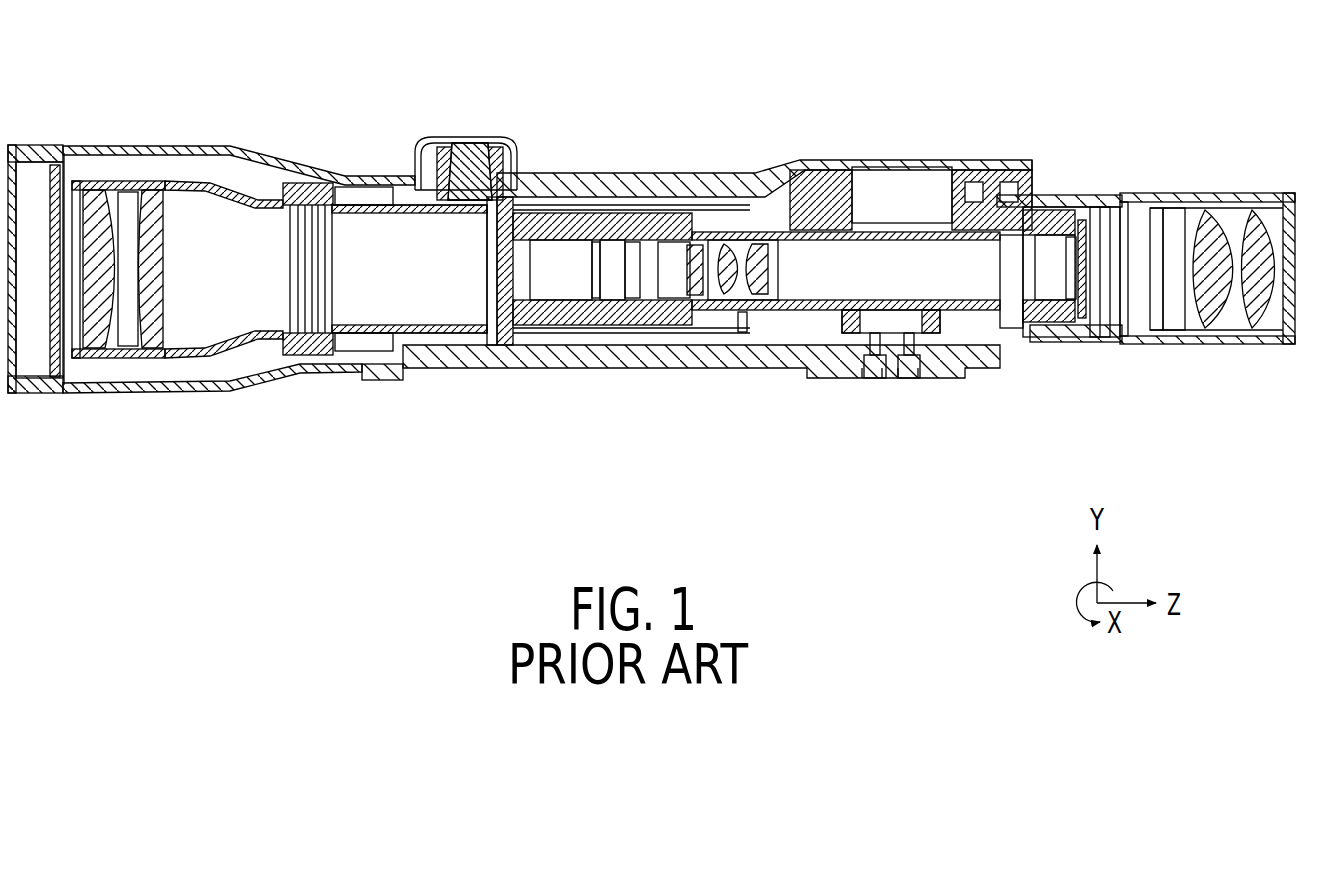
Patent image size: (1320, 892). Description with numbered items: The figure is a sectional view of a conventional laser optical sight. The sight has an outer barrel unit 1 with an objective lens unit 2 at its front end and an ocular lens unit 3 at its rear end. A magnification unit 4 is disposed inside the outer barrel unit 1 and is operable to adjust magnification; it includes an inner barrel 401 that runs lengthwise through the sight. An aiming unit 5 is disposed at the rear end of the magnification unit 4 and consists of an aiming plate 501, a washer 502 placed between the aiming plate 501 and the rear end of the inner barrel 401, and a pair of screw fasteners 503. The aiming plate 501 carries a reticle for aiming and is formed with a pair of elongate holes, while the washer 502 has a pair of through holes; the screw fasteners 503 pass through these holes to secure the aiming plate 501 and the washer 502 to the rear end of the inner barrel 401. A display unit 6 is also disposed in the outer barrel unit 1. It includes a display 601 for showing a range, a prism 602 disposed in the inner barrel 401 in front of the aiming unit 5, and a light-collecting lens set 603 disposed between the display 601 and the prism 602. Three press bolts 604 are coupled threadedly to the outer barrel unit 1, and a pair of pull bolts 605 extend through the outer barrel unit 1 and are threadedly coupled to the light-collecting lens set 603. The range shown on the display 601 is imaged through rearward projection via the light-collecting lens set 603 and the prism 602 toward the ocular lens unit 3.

The outer barrel unit 1 is at (597, 172).
The objective lens unit 2 is at (135, 176).
The ocular lens unit 3 is at (1282, 190).
The magnification unit 4 is at (783, 228).
The inner barrel 401 is at (1047, 312).
The aiming unit 5 is at (1090, 248).
The aiming plate 501 is at (1078, 287).
The washer 502 is at (1072, 270).
The screw fasteners 503 is at (1107, 328).
The display unit 6 is at (830, 322).
The display 601 is at (764, 318).
The prism 602 is at (1007, 312).
The light-collecting lens set 603 is at (936, 328).
The press bolts 604 is at (923, 347).
The pull bolts 605 is at (903, 353).